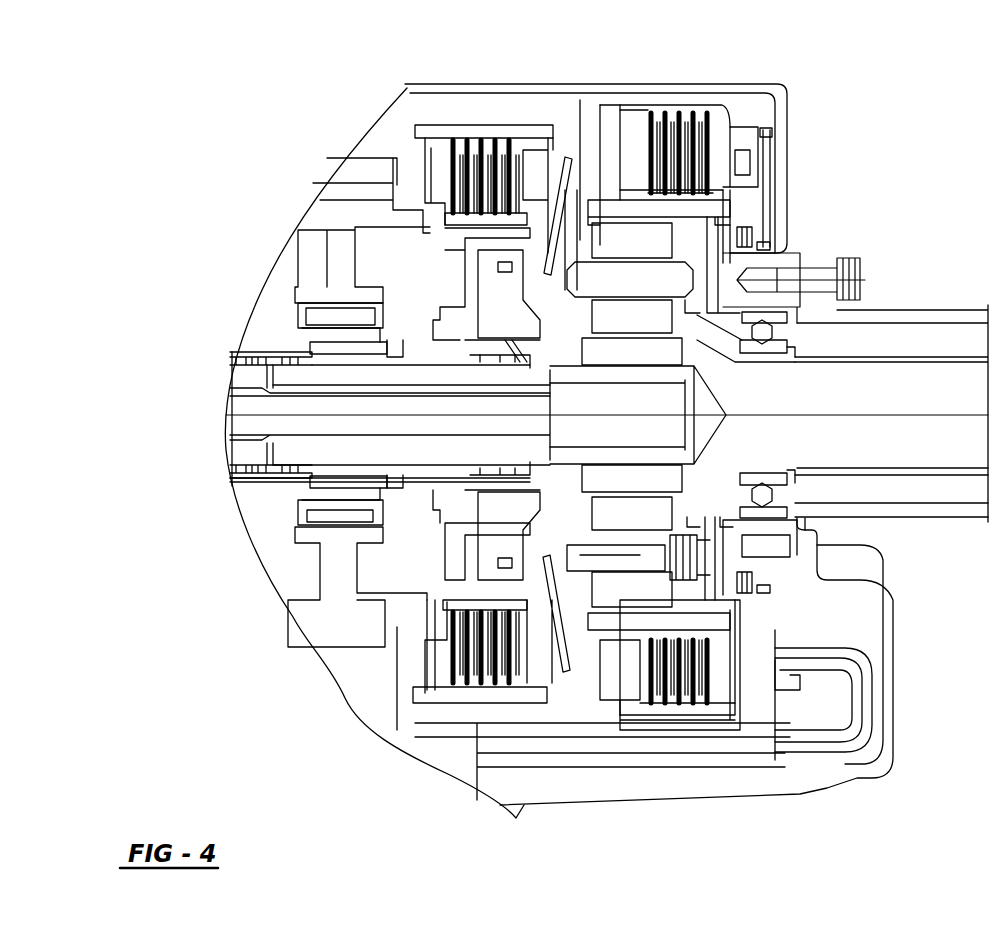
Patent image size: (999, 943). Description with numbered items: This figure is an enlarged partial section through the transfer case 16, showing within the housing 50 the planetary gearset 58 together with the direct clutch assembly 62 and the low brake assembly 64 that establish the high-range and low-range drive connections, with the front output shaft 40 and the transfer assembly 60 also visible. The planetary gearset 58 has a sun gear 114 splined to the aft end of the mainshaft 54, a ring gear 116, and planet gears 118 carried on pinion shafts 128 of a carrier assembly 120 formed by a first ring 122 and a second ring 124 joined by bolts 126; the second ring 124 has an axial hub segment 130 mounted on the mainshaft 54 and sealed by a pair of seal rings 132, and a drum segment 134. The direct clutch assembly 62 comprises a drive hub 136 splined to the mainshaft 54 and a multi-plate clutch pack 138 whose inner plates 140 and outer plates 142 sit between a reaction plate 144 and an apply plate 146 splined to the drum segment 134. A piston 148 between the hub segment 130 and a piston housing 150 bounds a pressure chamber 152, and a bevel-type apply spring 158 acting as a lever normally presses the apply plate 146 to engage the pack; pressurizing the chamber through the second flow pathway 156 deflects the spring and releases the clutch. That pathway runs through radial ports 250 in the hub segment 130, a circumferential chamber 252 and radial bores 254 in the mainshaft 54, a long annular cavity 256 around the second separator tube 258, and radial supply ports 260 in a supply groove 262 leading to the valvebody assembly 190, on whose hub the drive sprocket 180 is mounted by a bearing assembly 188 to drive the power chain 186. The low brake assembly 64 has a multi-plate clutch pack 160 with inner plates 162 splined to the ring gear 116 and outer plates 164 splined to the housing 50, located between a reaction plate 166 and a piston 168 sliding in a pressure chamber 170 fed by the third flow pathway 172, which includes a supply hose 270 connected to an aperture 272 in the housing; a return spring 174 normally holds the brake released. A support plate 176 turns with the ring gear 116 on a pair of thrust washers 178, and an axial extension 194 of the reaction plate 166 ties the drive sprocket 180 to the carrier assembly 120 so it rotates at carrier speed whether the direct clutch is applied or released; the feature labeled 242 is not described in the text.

The transfer case 16 is at (958, 163).
The front output shaft 40 is at (942, 355).
The housing 50 is at (945, 500).
The mainshaft 54 is at (280, 332).
The planetary gearset 58 is at (724, 351).
The transfer assembly 60 is at (316, 200).
The direct clutch assembly 62 is at (441, 75).
The low brake assembly 64 is at (751, 100).
The sun gear 114 is at (615, 355).
The ring gear 116 is at (620, 680).
The planet gears 118 is at (632, 294).
The carrier assembly 120 is at (591, 149).
The first ring 122 is at (690, 512).
The second ring 124 is at (650, 555).
The bolts 126 is at (615, 605).
The pinion shafts 128 is at (630, 279).
The axial hub segment 130 is at (555, 470).
The seal rings 132 is at (535, 430).
The drum segment 134 is at (455, 700).
The drive hub 136 is at (448, 565).
The multi-plate clutch pack 138 is at (425, 665).
The inner plates 140 is at (447, 659).
The outer plates 142 is at (462, 687).
The reaction plate 144 is at (440, 168).
The apply plate 146 is at (530, 165).
The piston 148 is at (530, 548).
The piston housing 150 is at (468, 262).
The pressure chamber 152 is at (502, 295).
The second flow pathway 156 is at (400, 386).
The apply spring 158 is at (640, 212).
The multi-plate clutch pack 160 is at (728, 663).
The inner plates 162 is at (718, 643).
The outer plates 164 is at (710, 703).
The reaction plate 166 is at (634, 700).
The piston 168 is at (765, 165).
The pressure chamber 170 is at (770, 188).
The third flow pathway 172 is at (853, 652).
The return spring 174 is at (750, 240).
The support plate 176 is at (815, 565).
The thrust washers 178 is at (760, 292).
The drive sprocket 180 is at (336, 247).
The power chain 186 is at (350, 175).
The bearing assembly 188 is at (355, 305).
The valvebody assembly 190 is at (262, 512).
The axial extension 194 is at (390, 597).
The spline 242 is at (248, 345).
The radial ports 250 is at (510, 340).
The circumferential chamber 252 is at (510, 450).
The radial bores 254 is at (510, 378).
The annular cavity 256 is at (320, 394).
The second separator tube 258 is at (398, 448).
The radial supply ports 260 is at (265, 380).
The supply groove 262 is at (265, 478).
The supply hose 270 is at (845, 765).
The aperture 272 is at (790, 680).